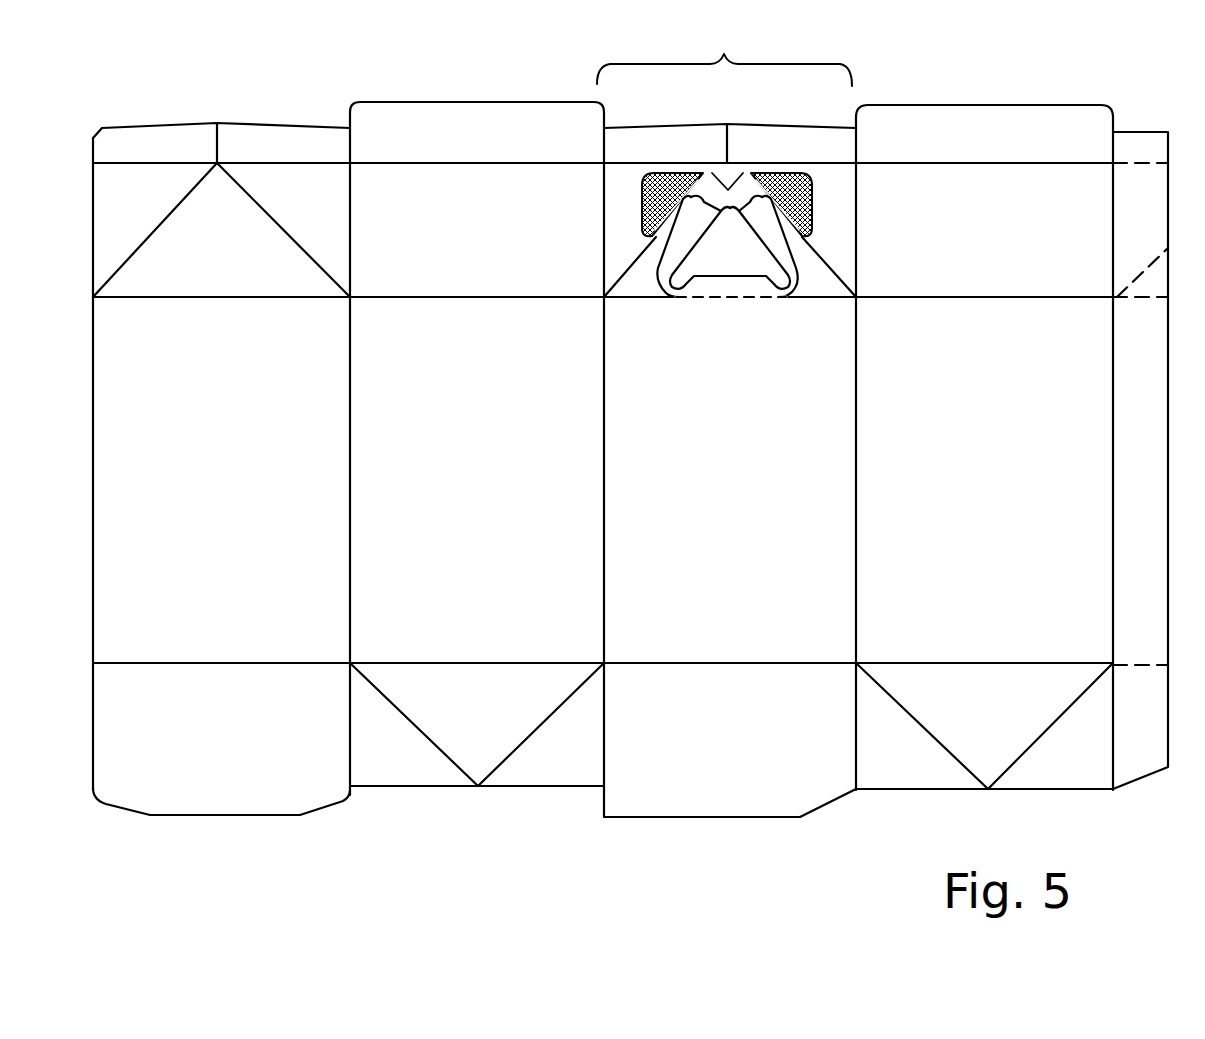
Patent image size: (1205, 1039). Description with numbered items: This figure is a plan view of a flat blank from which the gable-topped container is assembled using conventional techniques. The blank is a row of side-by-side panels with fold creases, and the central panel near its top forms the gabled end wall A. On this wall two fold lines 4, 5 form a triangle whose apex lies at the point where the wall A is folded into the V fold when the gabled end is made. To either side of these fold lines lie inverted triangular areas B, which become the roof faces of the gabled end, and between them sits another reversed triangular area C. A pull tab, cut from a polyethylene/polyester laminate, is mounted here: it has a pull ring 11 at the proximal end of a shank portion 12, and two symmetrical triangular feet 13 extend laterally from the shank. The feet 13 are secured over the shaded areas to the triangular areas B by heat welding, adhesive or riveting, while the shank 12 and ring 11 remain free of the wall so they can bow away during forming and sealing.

The fold line 4 is at (632, 258).
The fold line 5 is at (838, 273).
The pull ring 11 is at (732, 270).
The shank portion 12 is at (728, 182).
The triangular feet 13 is at (640, 218).
The gabled end wall A is at (724, 54).
The inverted triangular areas B is at (625, 183).
The reversed triangular area C is at (640, 288).